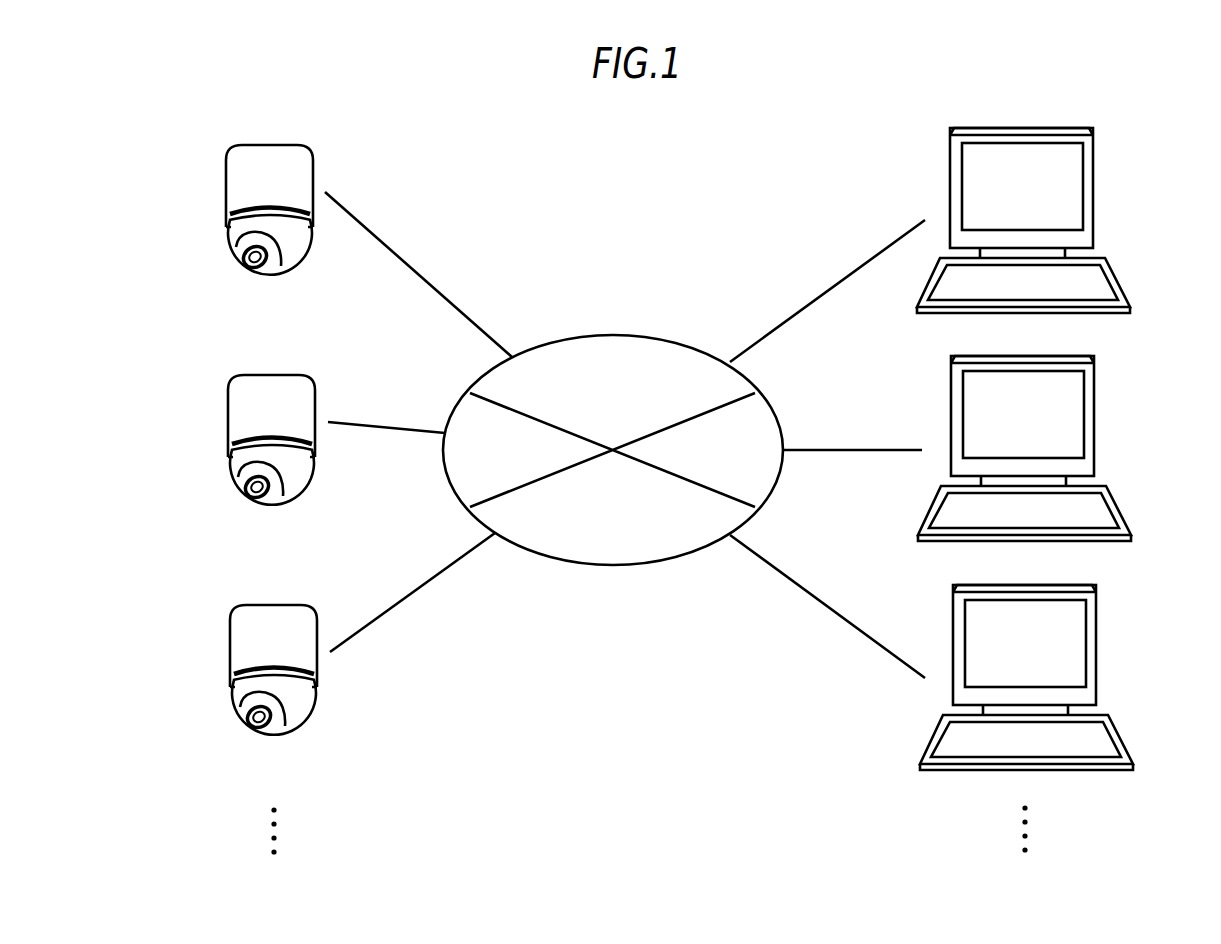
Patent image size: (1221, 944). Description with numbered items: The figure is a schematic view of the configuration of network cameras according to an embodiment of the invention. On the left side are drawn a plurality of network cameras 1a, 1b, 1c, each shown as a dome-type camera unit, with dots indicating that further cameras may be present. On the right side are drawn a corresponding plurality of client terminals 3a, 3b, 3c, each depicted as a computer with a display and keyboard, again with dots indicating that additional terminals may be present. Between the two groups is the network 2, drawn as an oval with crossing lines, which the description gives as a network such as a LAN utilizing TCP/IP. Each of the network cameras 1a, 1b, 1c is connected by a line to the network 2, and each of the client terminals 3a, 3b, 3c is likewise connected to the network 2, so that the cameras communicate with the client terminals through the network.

The network camera 1a is at (228, 180).
The network camera 1b is at (228, 410).
The network camera 1c is at (230, 640).
The network 2 is at (610, 334).
The client terminal 3a is at (1095, 146).
The client terminal 3b is at (1096, 374).
The client terminal 3c is at (1098, 604).